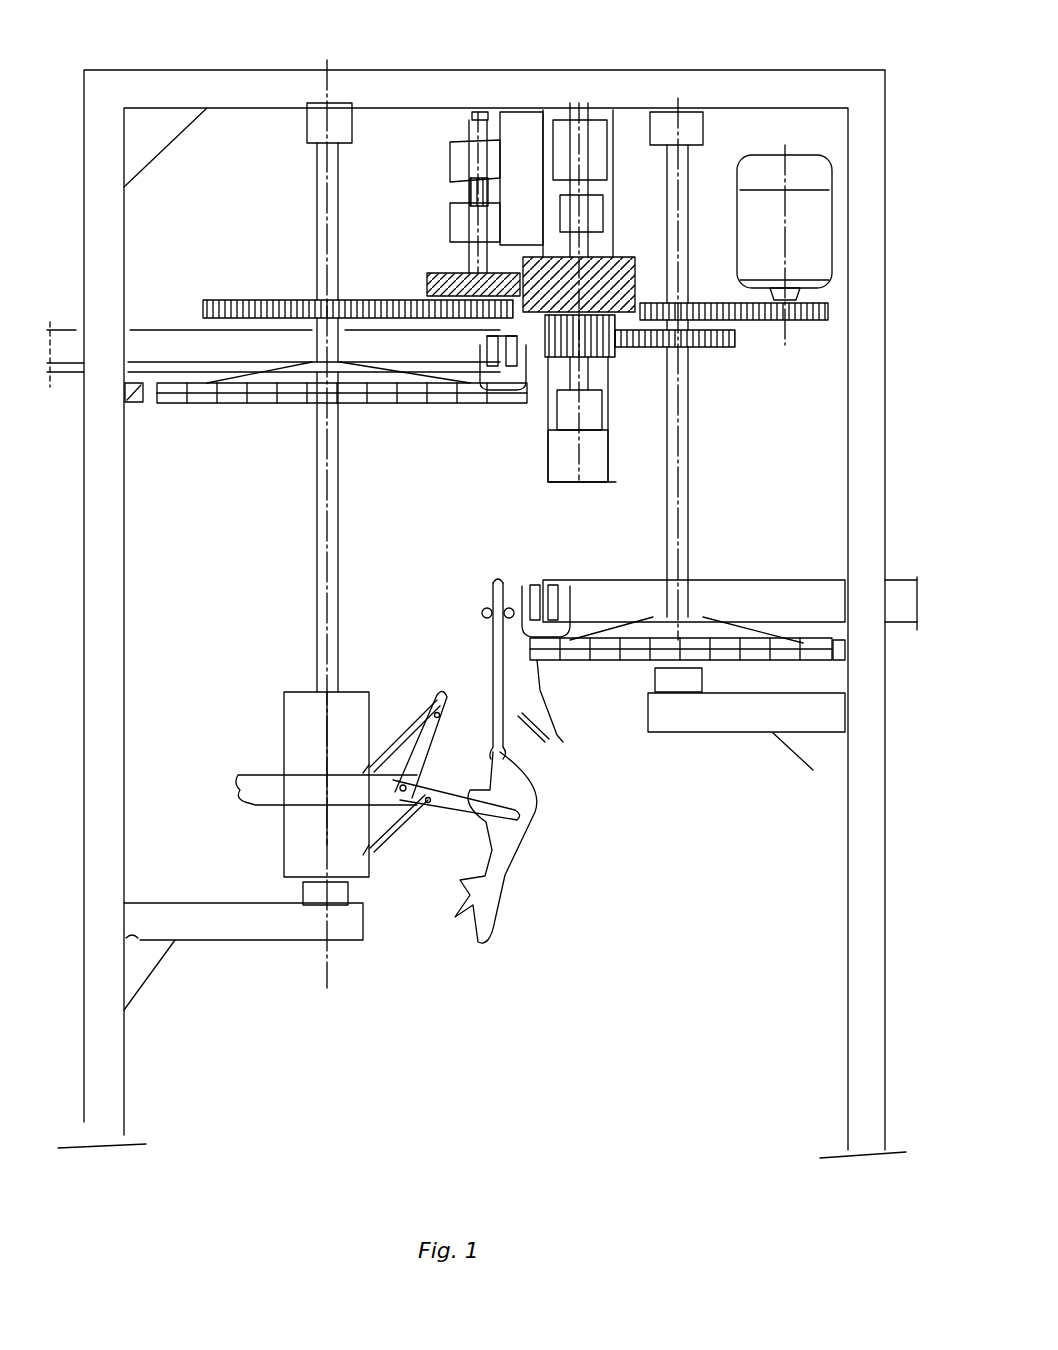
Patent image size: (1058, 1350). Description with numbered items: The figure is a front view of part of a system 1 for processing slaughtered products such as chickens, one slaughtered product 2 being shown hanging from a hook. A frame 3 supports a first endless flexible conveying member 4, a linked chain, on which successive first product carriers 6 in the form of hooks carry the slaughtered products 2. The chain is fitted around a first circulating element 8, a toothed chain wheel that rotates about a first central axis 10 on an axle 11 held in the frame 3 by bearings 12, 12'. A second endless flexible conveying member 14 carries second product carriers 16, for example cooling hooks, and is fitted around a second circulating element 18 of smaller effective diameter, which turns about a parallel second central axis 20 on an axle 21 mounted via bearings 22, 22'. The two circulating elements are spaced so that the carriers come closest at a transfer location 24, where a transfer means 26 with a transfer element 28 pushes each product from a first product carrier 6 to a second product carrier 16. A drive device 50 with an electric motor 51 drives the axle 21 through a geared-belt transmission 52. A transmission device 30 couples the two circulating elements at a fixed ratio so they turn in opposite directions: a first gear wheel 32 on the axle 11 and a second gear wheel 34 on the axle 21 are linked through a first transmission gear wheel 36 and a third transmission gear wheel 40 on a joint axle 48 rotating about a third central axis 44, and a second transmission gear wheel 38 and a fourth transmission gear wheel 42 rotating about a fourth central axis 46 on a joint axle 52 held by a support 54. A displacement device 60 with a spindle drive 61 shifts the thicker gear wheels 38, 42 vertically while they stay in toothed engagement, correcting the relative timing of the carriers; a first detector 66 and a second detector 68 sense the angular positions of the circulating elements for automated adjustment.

The system 1 is at (202, 43).
The slaughtered product 2 is at (517, 853).
The frame 3 is at (768, 82).
The first endless flexible conveying member 4 is at (154, 336).
The first product carrier 6 is at (485, 670).
The first circulating element 8 is at (277, 417).
The first central axis 10 is at (330, 540).
The axle 11 is at (338, 491).
The bearing 12 is at (353, 127).
The bearing 12' is at (358, 918).
The second endless flexible conveying member 14 is at (782, 593).
The second product carrier 16 is at (560, 742).
The second circulating element 18 is at (623, 685).
The second central axis 20 is at (688, 412).
The axle 21 is at (688, 468).
The bearing 22 is at (695, 131).
The bearing 22' is at (708, 682).
The transfer location 24 is at (587, 820).
The transfer means 26 is at (426, 690).
The transfer element 28 is at (455, 812).
The transmission device 30 is at (394, 245).
The first gear wheel 32 is at (258, 300).
The second gear wheel 34 is at (720, 350).
The first transmission gear wheel 36 is at (430, 273).
The second transmission gear wheel 38 is at (636, 266).
The third transmission gear wheel 40 is at (427, 284).
The fourth transmission gear wheel 42 is at (614, 360).
The third central axis 44 is at (469, 187).
The fourth central axis 46 is at (603, 198).
The joint axle 48 is at (460, 138).
The drive device 50 is at (510, 152).
The electric motor 51 is at (825, 237).
The geared-belt transmission 52 is at (600, 250).
The support 54 is at (592, 165).
The displacement device 60 is at (589, 504).
The spindle drive 61 is at (540, 470).
The first detector 66 is at (135, 402).
The second detector 68 is at (845, 648).